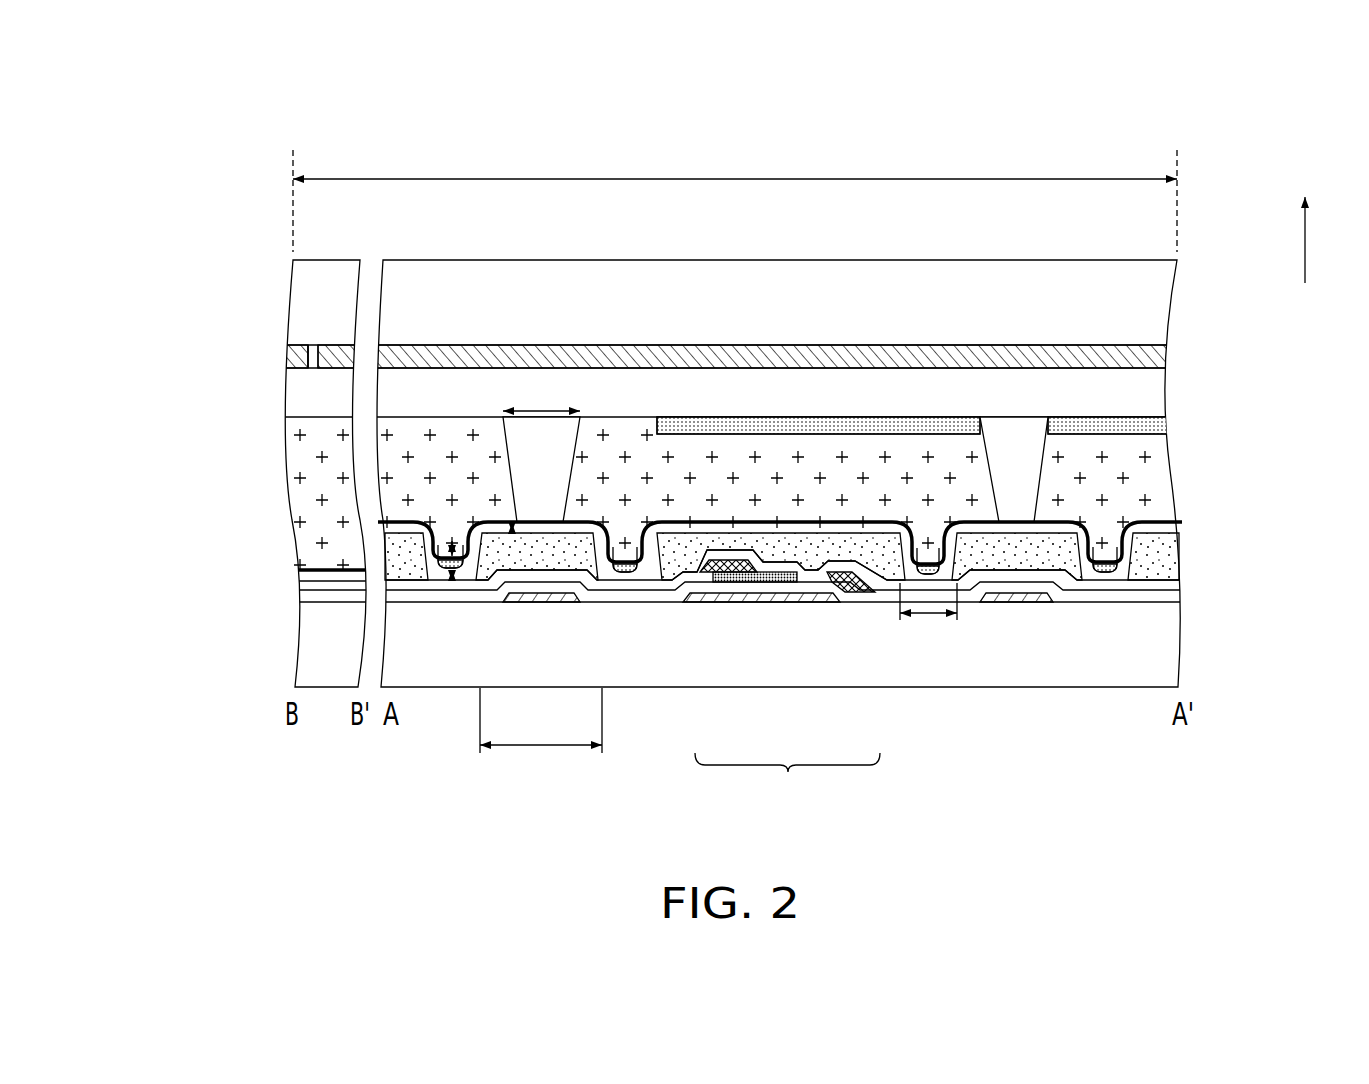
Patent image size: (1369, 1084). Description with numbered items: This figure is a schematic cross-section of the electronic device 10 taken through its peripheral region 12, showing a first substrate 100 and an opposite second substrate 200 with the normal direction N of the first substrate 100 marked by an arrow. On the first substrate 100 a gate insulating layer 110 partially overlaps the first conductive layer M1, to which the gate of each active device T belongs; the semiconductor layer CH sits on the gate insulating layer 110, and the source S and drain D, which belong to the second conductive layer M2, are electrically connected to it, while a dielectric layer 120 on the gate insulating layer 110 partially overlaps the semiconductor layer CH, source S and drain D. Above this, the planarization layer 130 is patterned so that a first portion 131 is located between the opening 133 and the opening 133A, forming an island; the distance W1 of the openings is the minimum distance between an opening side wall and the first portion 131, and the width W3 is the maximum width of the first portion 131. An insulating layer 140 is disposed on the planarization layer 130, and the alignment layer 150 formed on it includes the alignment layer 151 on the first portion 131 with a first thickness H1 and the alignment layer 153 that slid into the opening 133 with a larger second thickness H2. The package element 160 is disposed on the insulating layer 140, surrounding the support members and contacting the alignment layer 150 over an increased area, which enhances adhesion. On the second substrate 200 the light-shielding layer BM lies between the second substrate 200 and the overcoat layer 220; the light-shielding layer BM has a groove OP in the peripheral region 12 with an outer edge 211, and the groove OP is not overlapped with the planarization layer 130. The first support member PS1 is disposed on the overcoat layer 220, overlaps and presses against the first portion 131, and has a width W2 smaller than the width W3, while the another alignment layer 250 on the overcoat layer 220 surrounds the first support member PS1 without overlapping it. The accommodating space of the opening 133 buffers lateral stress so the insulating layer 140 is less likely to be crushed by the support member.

The electronic device 10 is at (1358, 767).
The peripheral region 12 is at (735, 195).
The first substrate 100 is at (312, 650).
The gate insulating layer 110 is at (308, 598).
The dielectric layer 120 is at (308, 586).
The planarization layer 130 is at (100, 85).
The first portion 131 is at (557, 560).
The opening 133 is at (420, 542).
The opening 133A is at (942, 539).
The insulating layer 140 is at (306, 570).
The alignment layer 150 is at (100, 200).
The alignment layer 151 is at (590, 519).
The alignment layer 153 is at (643, 540).
The package element 160 is at (398, 460).
The second substrate 200 is at (306, 292).
The outer edge 211 is at (308, 354).
The overcoat layer 220 is at (1153, 393).
The another alignment layer 250 is at (1162, 425).
The light-shielding layer BM is at (1152, 358).
The groove OP is at (315, 373).
The first support member PS1 is at (540, 430).
The first conductive layer M1 is at (519, 604).
The second conductive layer M2 is at (100, 327).
The source S is at (716, 576).
The drain D is at (860, 592).
The semiconductor layer CH is at (736, 580).
The active device T is at (787, 780).
The distance W1 is at (962, 618).
The width W2 is at (557, 409).
The width W3 is at (541, 734).
The first thickness H1 is at (507, 524).
The second thickness H2 is at (452, 582).
The normal direction N is at (1328, 240).